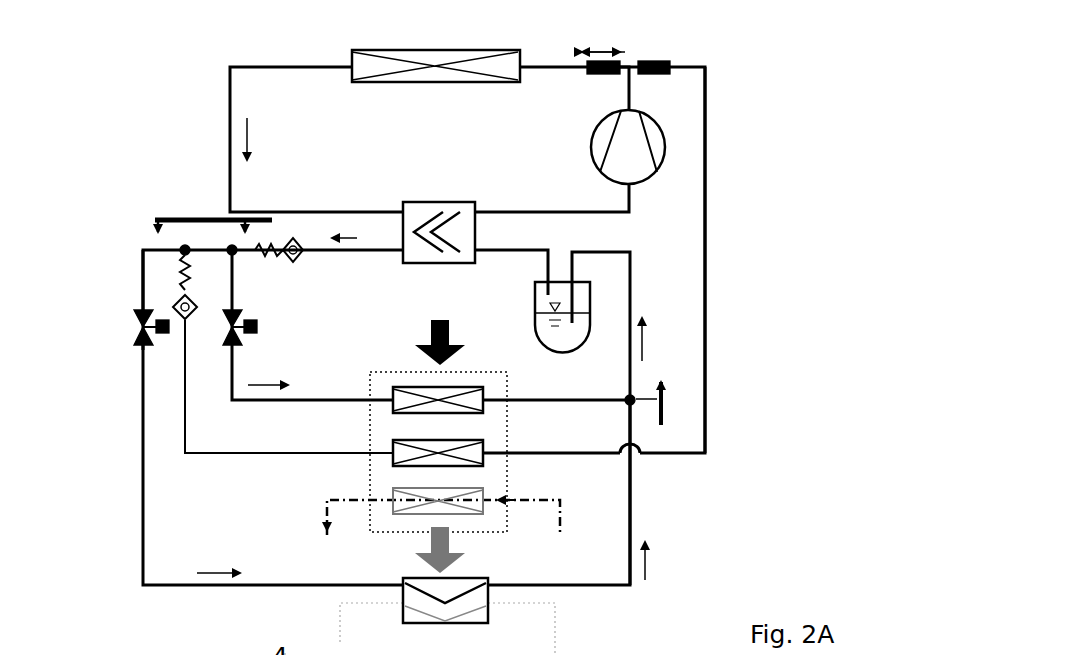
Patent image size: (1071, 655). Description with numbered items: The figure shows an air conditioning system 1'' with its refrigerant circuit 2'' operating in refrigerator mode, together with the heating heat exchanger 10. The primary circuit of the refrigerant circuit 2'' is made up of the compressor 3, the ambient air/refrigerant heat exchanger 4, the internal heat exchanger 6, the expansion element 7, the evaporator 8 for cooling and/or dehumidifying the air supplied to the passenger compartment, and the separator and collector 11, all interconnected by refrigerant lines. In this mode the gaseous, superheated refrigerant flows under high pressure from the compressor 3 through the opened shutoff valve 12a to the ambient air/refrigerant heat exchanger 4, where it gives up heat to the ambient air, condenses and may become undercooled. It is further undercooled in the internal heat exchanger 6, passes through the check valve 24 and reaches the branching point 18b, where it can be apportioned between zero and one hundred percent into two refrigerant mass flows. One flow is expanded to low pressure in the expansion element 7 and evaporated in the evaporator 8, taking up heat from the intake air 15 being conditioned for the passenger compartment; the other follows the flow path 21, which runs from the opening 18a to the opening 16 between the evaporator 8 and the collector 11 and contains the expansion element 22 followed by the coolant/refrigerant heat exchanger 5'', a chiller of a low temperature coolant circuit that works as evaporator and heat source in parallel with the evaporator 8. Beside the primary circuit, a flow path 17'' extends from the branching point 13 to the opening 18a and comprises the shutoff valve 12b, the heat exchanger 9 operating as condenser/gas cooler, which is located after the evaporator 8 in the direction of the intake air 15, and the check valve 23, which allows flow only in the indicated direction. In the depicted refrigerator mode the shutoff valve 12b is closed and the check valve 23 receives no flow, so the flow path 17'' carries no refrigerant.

The air conditioning system 1'' is at (775, 101).
The refrigerant circuit 2'' is at (762, 228).
The compressor 3 is at (600, 153).
The ambient air/refrigerant heat exchanger 4 is at (355, 66).
The coolant/refrigerant heat exchanger 5'' is at (475, 616).
The internal heat exchanger 6 is at (449, 203).
The expansion element 7 is at (256, 327).
The evaporator 8 is at (393, 390).
The heat exchanger operating as condenser/gas cooler 9 is at (396, 450).
The heating heat exchanger 10 is at (478, 504).
The separator and collector 11 is at (548, 331).
The shutoff valve 12a is at (588, 75).
The shutoff valve 12b is at (670, 63).
The branching point 13 is at (627, 69).
The intake air 15 is at (430, 323).
The opening 16 is at (624, 404).
The flow path 17'' is at (748, 380).
The opening 18a is at (183, 252).
The branching point 18b is at (235, 253).
The flow path 21 is at (633, 483).
The expansion element 22 is at (140, 340).
The check valve 23 is at (188, 316).
The check valve 24 is at (297, 244).